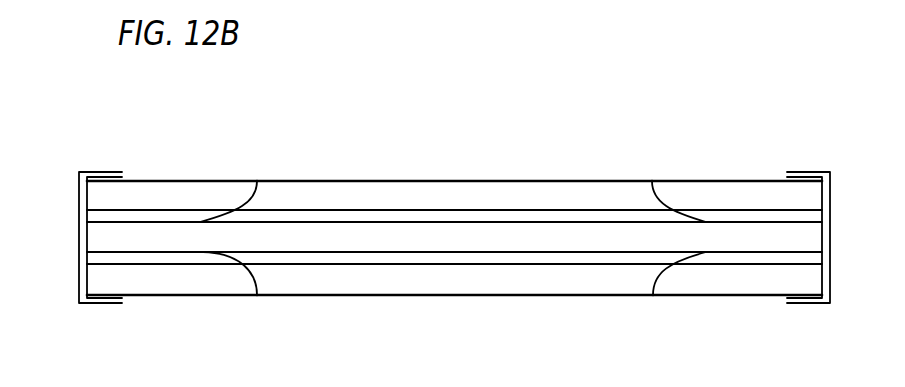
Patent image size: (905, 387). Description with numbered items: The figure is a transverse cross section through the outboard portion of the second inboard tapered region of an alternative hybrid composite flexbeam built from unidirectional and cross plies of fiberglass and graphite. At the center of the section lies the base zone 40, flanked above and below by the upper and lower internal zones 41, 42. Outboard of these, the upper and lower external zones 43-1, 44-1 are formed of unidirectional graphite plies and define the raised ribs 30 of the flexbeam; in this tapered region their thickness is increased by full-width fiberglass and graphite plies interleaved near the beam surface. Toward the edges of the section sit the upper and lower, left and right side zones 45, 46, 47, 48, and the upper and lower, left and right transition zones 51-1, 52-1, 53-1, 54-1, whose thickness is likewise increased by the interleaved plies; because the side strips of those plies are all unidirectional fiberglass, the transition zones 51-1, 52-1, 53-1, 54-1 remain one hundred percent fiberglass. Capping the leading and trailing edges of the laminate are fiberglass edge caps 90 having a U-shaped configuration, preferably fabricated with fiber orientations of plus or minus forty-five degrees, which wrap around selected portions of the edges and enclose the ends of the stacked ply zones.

The raised ribs 30 is at (78, 238).
The fiberglass edge caps 90 is at (828, 237).
The base zone 40 is at (372, 237).
The upper internal zone 41 is at (300, 220).
The lower internal zone 42 is at (307, 260).
The upper external zone 43-1 is at (405, 195).
The lower external zone 44-1 is at (452, 280).
The upper left side zone 45 is at (115, 215).
The lower left side zone 46 is at (135, 257).
The upper right side zone 47 is at (775, 217).
The lower right side zone 48 is at (767, 258).
The upper left transition zone 51-1 is at (147, 193).
The lower left transition zone 52-1 is at (165, 283).
The upper right transition zone 53-1 is at (725, 197).
The lower right transition zone 54-1 is at (727, 282).